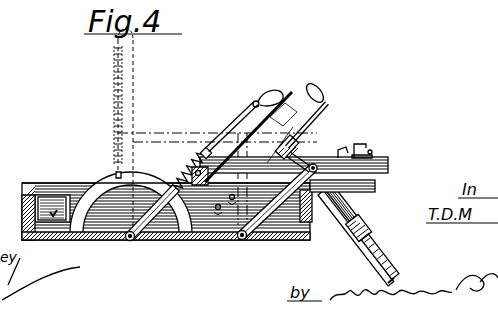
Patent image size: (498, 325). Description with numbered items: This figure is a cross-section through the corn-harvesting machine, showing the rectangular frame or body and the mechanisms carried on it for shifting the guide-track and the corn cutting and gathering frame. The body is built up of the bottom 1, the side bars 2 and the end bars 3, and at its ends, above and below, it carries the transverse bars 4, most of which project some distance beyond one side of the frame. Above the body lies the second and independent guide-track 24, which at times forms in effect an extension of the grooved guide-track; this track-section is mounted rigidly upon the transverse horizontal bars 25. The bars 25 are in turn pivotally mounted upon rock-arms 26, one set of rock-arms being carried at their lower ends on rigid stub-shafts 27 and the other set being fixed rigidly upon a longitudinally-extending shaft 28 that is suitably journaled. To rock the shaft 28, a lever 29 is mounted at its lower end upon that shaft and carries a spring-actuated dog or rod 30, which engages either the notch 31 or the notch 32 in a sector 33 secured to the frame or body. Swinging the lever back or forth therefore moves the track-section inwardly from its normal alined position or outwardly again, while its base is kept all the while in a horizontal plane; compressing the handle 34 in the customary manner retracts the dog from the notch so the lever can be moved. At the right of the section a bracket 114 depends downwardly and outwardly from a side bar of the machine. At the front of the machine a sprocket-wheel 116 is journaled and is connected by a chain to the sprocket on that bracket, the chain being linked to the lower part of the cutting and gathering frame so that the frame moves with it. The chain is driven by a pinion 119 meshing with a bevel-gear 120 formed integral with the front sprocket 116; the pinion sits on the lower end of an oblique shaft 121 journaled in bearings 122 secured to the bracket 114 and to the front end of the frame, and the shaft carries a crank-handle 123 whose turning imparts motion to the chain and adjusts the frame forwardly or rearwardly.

The bottom 1 is at (92, 240).
The side bars 2 is at (22, 214).
The end bars 3 is at (52, 208).
The transverse bars 4 is at (58, 183).
The second guide-track 24 is at (355, 142).
The transverse horizontal bars 25 is at (437, 157).
The rock-arms 26 is at (162, 215).
The stub-shafts 27 is at (244, 241).
The longitudinally-extending shaft 28 is at (128, 241).
The lever 29 is at (236, 131).
The center line 30 is at (217, 177).
The notch 31 is at (176, 184).
The notch 32 is at (116, 176).
The sector 33 is at (131, 202).
The handle 34 is at (270, 88).
The bracket 114 is at (338, 240).
The sprocket-wheel 116 is at (372, 273).
The pinion 119 is at (372, 238).
The bevel-gear 120 is at (387, 274).
The oblique shaft 121 is at (345, 211).
The bearings 122 is at (297, 146).
The crank-handle 123 is at (323, 100).